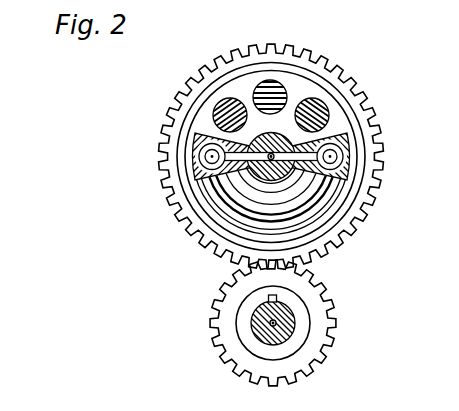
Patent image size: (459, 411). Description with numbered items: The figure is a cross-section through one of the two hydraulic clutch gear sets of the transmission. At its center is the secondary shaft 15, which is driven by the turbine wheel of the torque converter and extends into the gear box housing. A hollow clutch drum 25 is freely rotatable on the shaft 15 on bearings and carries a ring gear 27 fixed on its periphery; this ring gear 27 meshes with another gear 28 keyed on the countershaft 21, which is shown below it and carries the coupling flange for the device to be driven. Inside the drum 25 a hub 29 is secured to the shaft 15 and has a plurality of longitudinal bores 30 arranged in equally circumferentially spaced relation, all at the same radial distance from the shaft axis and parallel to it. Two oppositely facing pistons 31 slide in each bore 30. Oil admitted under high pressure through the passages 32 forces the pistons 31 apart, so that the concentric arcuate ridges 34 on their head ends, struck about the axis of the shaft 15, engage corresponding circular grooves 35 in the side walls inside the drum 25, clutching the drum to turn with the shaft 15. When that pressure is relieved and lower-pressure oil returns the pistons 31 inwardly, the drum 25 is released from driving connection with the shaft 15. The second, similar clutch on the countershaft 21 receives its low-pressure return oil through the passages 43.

The secondary shaft 15 is at (266, 134).
The countershaft 21 is at (252, 343).
The clutch drum 25 is at (182, 167).
The ring gear 27 is at (332, 73).
The gear 28 is at (317, 308).
The hub 29 is at (207, 203).
The longitudinal bores 30 is at (242, 155).
The pistons 31 is at (224, 182).
The passages 32 is at (257, 180).
The concentric arcuate ridges 34 is at (226, 118).
The circular grooves 35 is at (322, 201).
The passages 43 is at (282, 333).